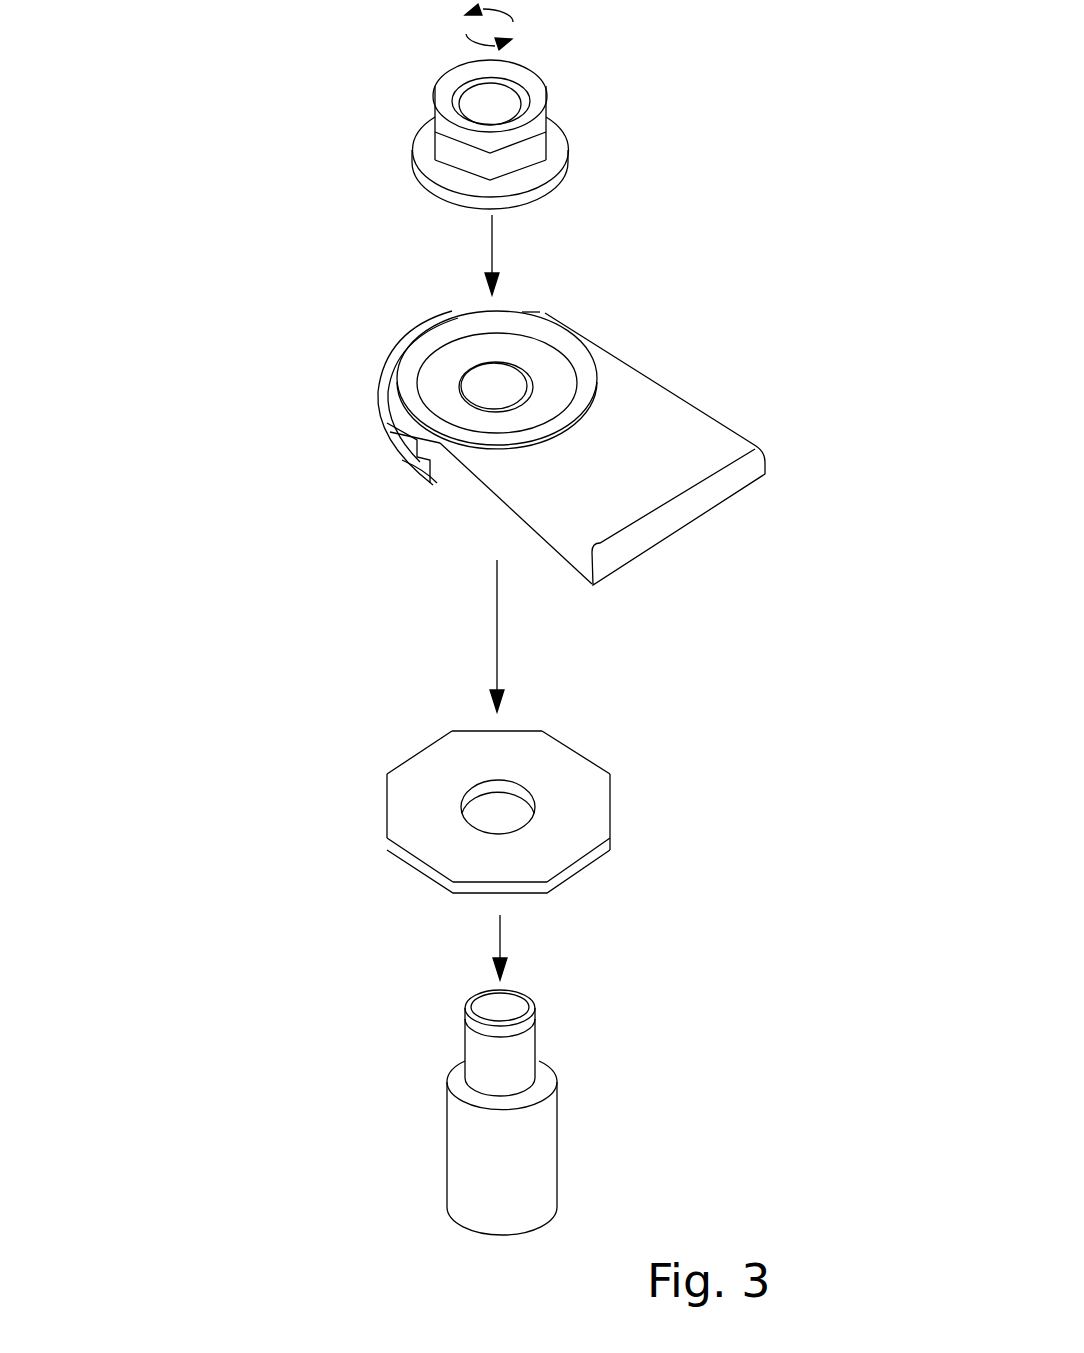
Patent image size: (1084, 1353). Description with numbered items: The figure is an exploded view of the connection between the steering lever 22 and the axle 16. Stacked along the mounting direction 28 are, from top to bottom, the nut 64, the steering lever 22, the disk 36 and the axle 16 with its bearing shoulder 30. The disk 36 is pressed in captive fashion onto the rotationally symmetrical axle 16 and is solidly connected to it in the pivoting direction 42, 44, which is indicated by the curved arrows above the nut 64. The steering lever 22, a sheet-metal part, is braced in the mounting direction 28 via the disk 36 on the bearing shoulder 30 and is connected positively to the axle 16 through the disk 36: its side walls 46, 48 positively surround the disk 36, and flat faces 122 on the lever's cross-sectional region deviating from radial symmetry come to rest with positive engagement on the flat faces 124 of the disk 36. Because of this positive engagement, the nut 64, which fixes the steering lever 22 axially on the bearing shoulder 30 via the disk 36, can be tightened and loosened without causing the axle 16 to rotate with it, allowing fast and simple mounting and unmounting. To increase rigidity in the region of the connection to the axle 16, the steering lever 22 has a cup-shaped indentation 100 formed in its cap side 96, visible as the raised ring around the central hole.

The axle 16 is at (506, 1112).
The steering lever 22 is at (526, 438).
The mounting direction 28 is at (492, 253).
The bearing shoulder 30 is at (543, 1073).
The disk 36 is at (504, 829).
The pivoting direction 42 is at (513, 9).
The pivoting direction 44 is at (468, 40).
The side wall 46 is at (752, 462).
The side wall 48 is at (457, 482).
The nut 64 is at (545, 148).
The cap side 96 is at (620, 487).
The cup-shaped indentation 100 is at (548, 368).
The flat faces 122 is at (303, 374).
The flat faces 124 is at (504, 824).